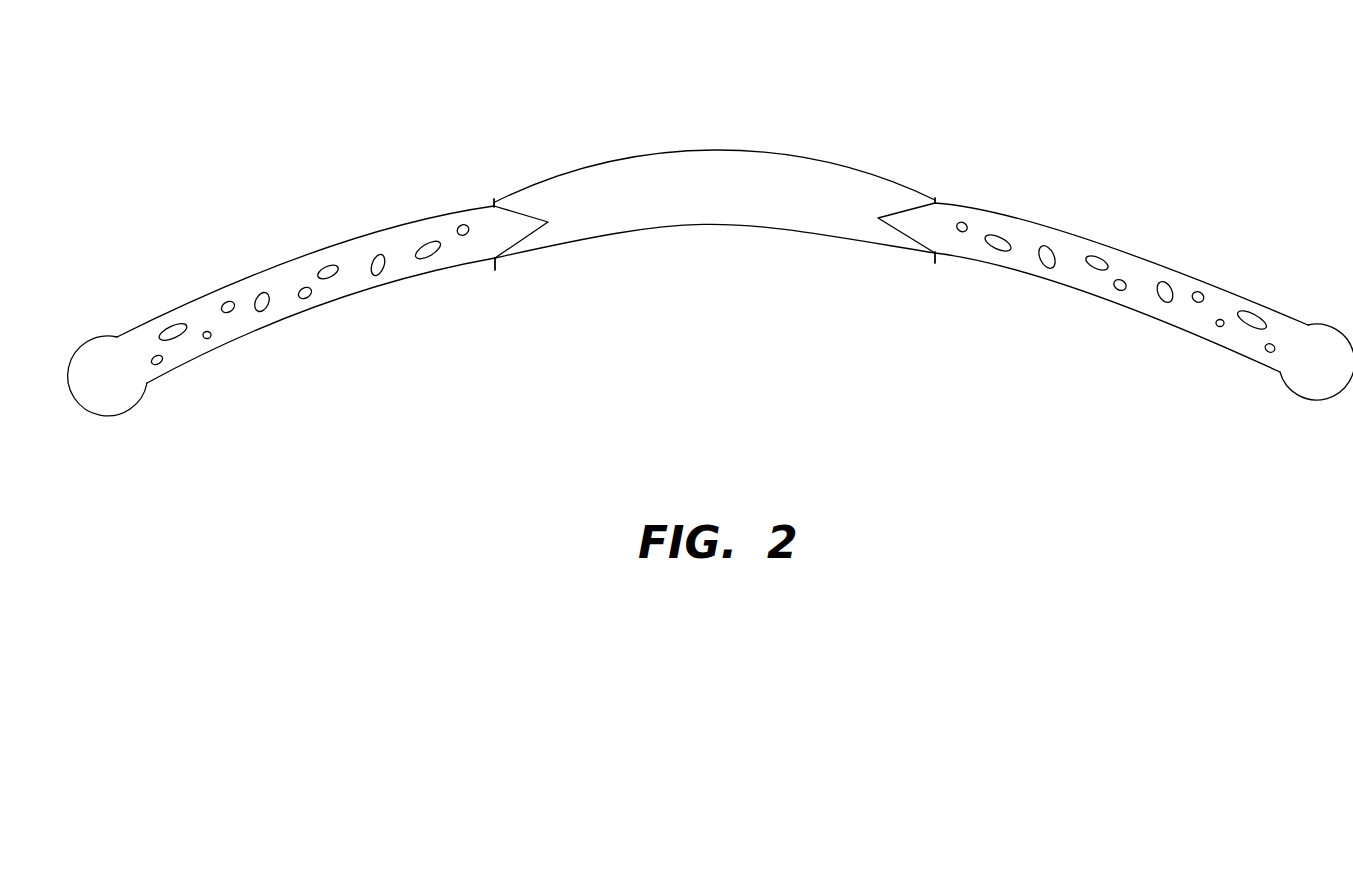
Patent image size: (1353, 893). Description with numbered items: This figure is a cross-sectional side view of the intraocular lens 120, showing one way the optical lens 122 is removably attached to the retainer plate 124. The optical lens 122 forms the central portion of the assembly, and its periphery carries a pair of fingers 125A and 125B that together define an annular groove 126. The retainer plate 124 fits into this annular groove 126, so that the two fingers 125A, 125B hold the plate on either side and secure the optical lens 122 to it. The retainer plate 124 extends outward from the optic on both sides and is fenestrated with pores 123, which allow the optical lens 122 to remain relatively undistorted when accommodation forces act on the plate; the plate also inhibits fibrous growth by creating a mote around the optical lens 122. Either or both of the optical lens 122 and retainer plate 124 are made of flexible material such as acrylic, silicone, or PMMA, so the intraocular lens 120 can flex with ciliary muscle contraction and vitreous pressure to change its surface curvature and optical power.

The intraocular lens 120 is at (710, 219).
The optical lens 122 is at (827, 173).
The pores 123 is at (260, 295).
The retainer plate 124 is at (325, 295).
The finger 125A is at (500, 203).
The finger 125B is at (930, 197).
The annular groove 126 is at (535, 242).